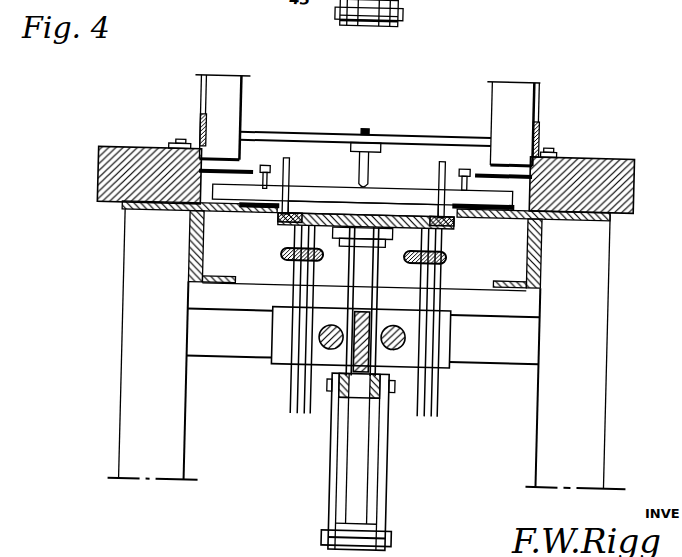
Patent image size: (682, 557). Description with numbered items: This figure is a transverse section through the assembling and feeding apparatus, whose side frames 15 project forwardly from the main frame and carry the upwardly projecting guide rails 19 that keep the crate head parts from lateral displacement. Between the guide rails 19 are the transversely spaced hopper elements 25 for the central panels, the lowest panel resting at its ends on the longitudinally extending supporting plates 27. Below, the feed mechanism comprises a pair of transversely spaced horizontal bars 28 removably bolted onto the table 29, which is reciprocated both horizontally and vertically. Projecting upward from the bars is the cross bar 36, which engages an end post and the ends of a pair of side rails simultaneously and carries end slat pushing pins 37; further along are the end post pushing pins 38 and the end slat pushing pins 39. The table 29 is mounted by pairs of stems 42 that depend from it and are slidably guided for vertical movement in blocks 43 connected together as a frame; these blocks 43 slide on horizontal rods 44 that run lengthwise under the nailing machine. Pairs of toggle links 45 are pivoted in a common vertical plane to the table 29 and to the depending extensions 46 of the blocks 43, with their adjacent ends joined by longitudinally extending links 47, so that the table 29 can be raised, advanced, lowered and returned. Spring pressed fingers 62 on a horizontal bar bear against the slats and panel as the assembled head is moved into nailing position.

The side frames 15 is at (189, 257).
The guide rails 19 is at (119, 187).
The hopper elements 25 is at (212, 116).
The supporting plates 27 is at (211, 160).
The horizontal bars 28 is at (275, 226).
The table 29 is at (374, 222).
The cross bar 36 is at (300, 195).
The end slat pushing pins 37 is at (453, 143).
The end post pushing pins 38 is at (436, 165).
The end slat pushing pins 39 is at (436, 197).
The stems 42 is at (302, 276).
The blocks 43 is at (451, 338).
The horizontal rods 44 is at (353, 346).
The toggle links 45 is at (374, 338).
The depending extensions 46 is at (364, 500).
The longitudinally extending links 47 is at (348, 397).
The spring pressed fingers 62 is at (364, 152).